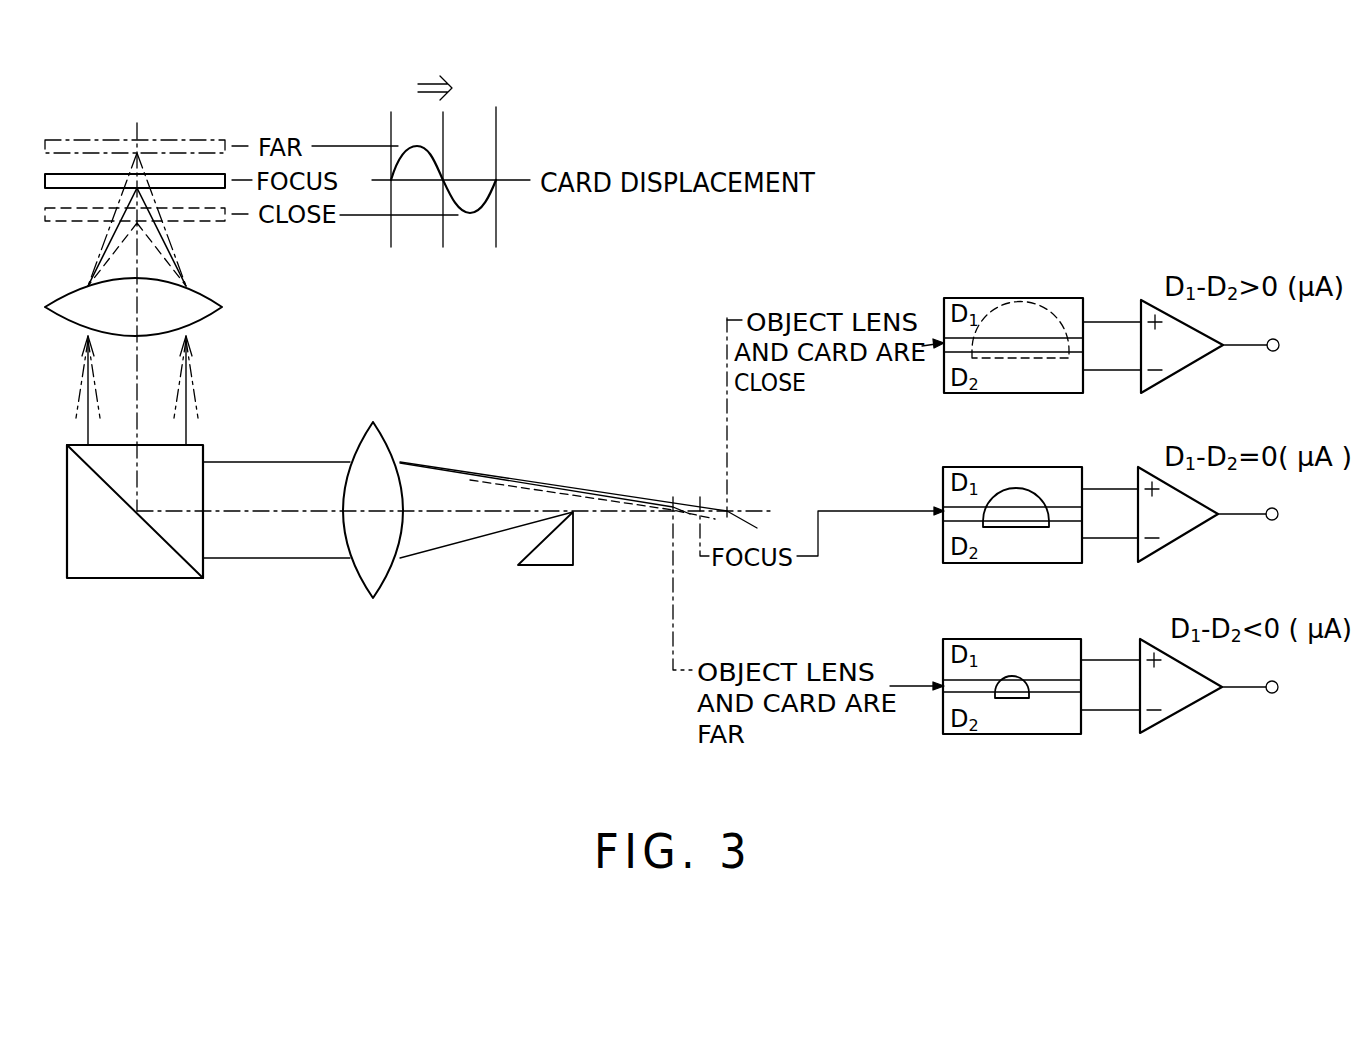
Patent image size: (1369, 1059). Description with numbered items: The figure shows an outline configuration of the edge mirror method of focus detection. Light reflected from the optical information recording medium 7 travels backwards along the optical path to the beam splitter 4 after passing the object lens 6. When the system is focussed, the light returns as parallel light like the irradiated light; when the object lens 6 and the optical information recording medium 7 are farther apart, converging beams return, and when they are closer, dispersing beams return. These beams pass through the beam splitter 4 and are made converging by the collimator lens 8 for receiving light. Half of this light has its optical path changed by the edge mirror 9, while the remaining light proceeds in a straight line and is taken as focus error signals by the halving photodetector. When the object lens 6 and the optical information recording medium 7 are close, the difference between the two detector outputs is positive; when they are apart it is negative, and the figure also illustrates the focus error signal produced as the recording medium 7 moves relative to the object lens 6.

The beam splitter 4 is at (145, 580).
The object lens 6 is at (205, 318).
The optical information recording medium 7 is at (64, 176).
The collimator lens 8 is at (395, 452).
The edge mirror 9 is at (575, 540).